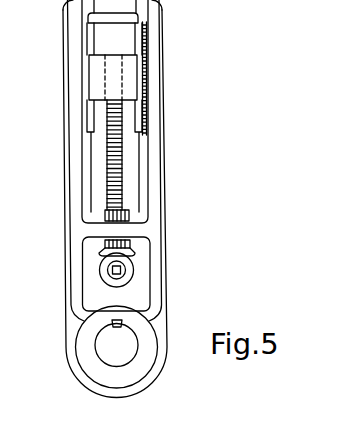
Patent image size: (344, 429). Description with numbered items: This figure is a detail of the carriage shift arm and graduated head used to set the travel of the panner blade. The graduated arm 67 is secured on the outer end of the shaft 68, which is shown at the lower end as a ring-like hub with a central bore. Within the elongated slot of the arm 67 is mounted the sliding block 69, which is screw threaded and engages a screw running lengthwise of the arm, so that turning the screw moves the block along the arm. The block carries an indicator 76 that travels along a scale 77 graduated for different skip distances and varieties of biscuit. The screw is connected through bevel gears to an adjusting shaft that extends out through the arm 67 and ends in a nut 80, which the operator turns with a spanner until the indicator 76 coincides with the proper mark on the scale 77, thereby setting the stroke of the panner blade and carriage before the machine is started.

The graduated arm 67 is at (70, 168).
The shaft 68 is at (125, 346).
The sliding block 69 is at (130, 62).
The indicator 76 is at (148, 79).
The scale 77 is at (147, 33).
The nut 80 is at (132, 265).